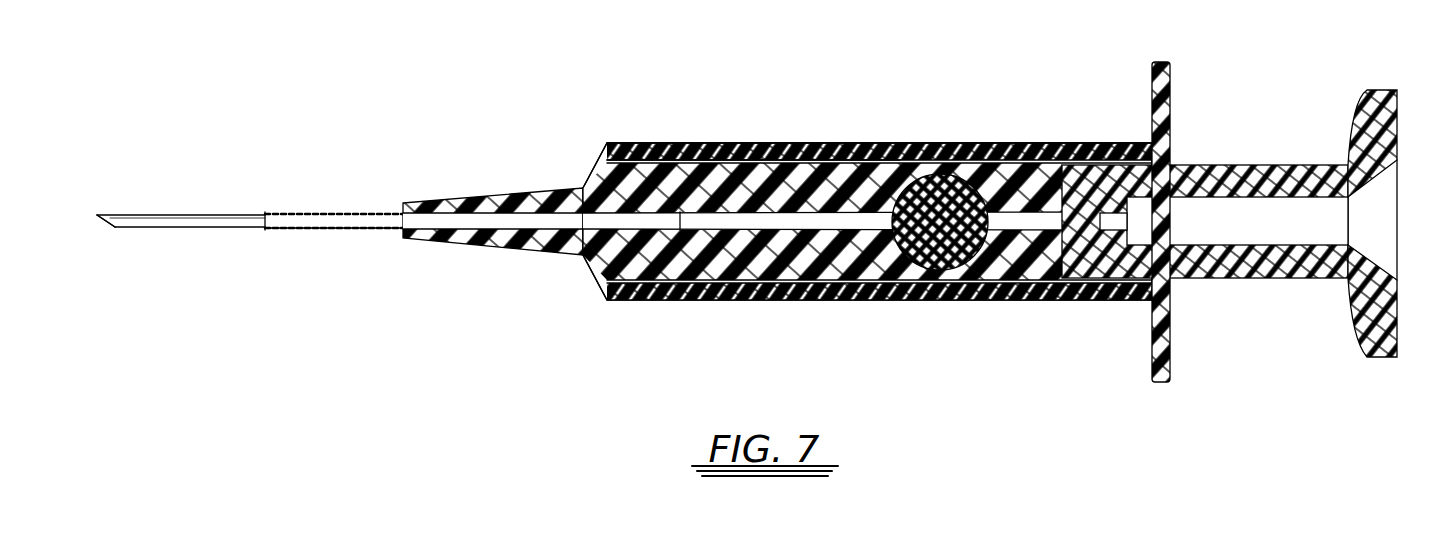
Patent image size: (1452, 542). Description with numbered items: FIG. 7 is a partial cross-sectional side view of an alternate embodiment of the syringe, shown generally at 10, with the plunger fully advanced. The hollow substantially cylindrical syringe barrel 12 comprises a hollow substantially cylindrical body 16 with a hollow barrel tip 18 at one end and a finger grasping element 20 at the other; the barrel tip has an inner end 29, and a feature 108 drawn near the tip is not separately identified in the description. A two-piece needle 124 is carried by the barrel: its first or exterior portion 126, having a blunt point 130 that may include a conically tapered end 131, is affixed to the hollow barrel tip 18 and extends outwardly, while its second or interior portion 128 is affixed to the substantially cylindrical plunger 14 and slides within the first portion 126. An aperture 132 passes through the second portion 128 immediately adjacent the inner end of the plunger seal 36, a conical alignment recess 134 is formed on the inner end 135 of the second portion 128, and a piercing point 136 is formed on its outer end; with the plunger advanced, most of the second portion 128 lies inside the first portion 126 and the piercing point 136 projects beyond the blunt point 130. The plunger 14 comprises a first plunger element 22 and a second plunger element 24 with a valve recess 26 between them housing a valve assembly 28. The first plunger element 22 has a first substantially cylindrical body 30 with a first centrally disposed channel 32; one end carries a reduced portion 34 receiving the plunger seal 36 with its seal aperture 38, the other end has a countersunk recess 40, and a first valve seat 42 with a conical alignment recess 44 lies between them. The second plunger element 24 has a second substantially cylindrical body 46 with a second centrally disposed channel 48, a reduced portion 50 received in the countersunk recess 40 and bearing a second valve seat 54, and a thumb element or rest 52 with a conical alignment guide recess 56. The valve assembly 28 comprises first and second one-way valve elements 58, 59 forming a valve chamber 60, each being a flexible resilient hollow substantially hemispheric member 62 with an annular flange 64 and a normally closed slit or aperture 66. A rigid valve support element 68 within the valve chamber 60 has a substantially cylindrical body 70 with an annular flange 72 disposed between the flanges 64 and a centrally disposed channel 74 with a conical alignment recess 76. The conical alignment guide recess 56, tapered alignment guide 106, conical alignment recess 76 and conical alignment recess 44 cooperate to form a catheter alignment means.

The syringe assembly 10 is at (775, 125).
The hollow substantially cylindrical syringe barrel 12 is at (1110, 130).
The substantially cylindrical plunger 14 is at (1300, 150).
The hollow substantially cylindrical body 16 is at (790, 143).
The hollow barrel tip 18 is at (485, 200).
The finger grasping element 20 is at (1165, 62).
The first plunger element 22 is at (757, 157).
The second plunger element 24 is at (1187, 152).
The valve recess 26 is at (897, 150).
The valve assembly 28 is at (990, 160).
The inner end of the hollow barrel tip 29 is at (582, 200).
The first substantially cylindrical body 30 is at (730, 300).
The first centrally disposed channel 32 is at (775, 300).
The reduced portion 34 is at (668, 148).
The plunger seal 36 is at (598, 163).
The seal aperture 38 is at (583, 252).
The countersunk recess 40 is at (970, 300).
The first valve seat 42 is at (878, 300).
The conical alignment recess 44 is at (855, 300).
The second substantially cylindrical body 46 is at (1257, 267).
The second centrally disposed channel 48 is at (1290, 227).
The reduced portion 50 is at (1020, 300).
The thumb element or rest 52 is at (1385, 92).
The second valve seat 54 is at (1003, 143).
The conical alignment guide recess 56 is at (1380, 180).
The first one-way valve element 58 is at (948, 185).
The second one-way valve element 59 is at (980, 300).
The valve chamber 60 is at (937, 180).
The flexible resilient hollow substantially hemispheric member 62 is at (893, 160).
The annular flange 64 is at (930, 300).
The normally closed centrally disposed slit or aperture 66 is at (870, 150).
The rigid valve support element 68 is at (950, 300).
The substantially cylindrical body 70 is at (968, 185).
The annular flange 72 is at (940, 300).
The centrally disposed channel 74 is at (958, 185).
The conical alignment recess 76 is at (1020, 143).
The tapered alignment guide 106 is at (1135, 232).
The nose lower wall 108 is at (593, 273).
The two piece needle 124 is at (527, 200).
The first or exterior portion 126 is at (377, 213).
The second or interior portion 128 is at (350, 228).
The blunt point 130 is at (263, 225).
The conically tapered end 131 is at (265, 218).
The aperture 132 is at (537, 247).
The conical alignment recess 134 is at (680, 300).
The inner end of the second portion 135 is at (605, 283).
The piercing point 136 is at (102, 222).